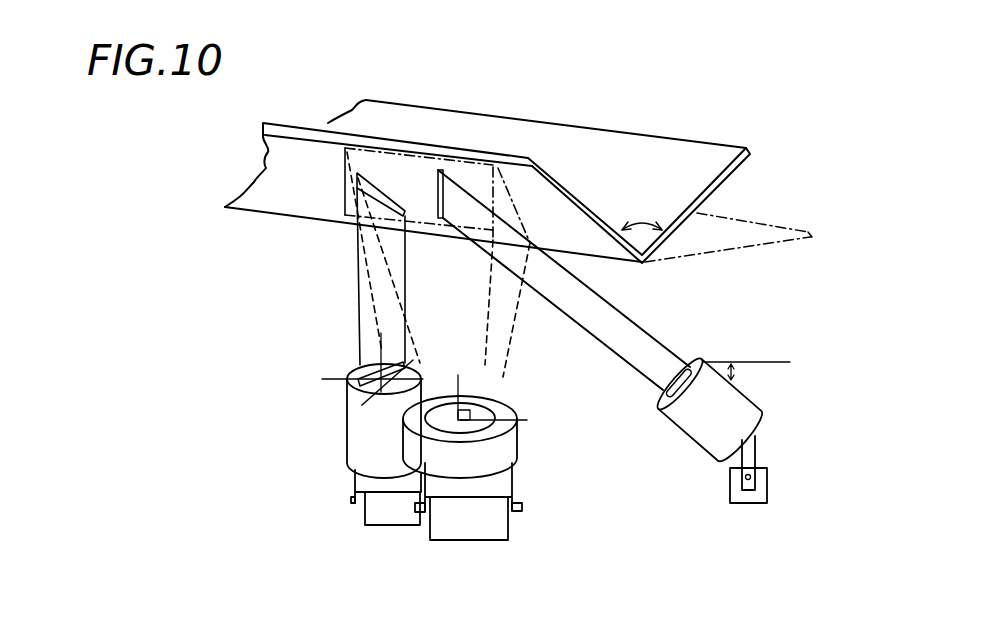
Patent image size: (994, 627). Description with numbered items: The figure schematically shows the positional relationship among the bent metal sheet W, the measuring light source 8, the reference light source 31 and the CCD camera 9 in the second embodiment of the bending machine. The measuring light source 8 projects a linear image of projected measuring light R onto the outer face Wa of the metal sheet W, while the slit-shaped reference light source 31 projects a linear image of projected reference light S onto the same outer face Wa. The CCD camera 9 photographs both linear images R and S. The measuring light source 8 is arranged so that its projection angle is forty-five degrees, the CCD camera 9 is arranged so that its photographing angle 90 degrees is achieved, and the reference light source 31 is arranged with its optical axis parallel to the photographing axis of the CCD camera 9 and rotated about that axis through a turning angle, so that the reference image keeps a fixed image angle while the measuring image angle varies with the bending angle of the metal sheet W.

The metal sheet W is at (695, 155).
The outer face Wa is at (283, 205).
The linear image of projected reference light S is at (357, 180).
The linear image of projected measuring light R is at (443, 198).
The reference light source 31 is at (363, 447).
The CCD camera 9 is at (508, 450).
The measuring light source 8 is at (752, 410).
The projection angle 90 degrees 90 is at (360, 362).